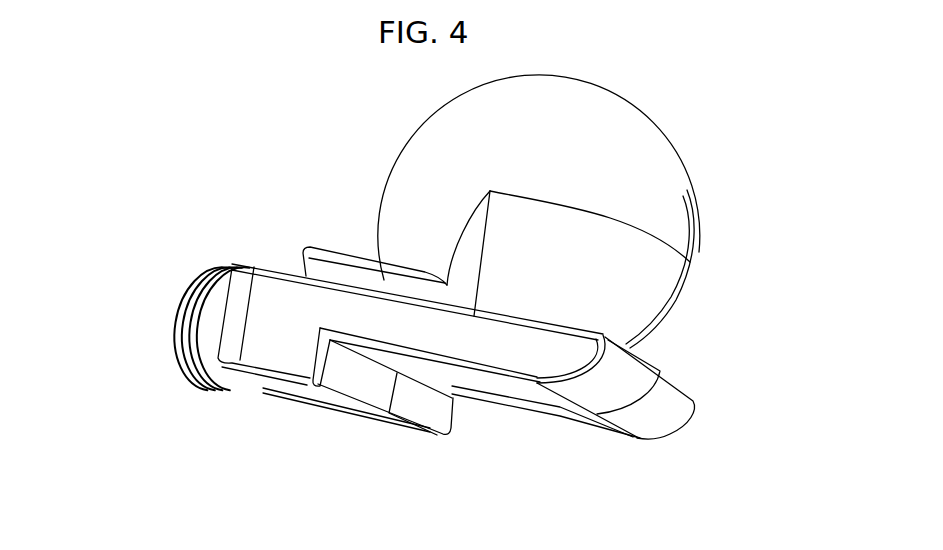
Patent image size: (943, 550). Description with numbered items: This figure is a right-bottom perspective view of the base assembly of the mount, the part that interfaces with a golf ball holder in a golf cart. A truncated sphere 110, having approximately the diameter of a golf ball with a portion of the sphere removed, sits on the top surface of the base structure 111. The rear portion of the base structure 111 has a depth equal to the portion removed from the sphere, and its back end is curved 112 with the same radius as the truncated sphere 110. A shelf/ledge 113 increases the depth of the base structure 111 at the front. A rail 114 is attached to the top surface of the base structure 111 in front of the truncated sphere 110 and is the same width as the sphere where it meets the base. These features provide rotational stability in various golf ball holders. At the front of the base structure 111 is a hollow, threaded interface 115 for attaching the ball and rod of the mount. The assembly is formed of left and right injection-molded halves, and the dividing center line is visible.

The truncated sphere 110 is at (605, 180).
The base structure 111 is at (282, 323).
The curved back end 112 is at (662, 400).
The shelf/ledge 113 is at (363, 377).
The rail 114 is at (330, 248).
The threaded interface 115 is at (197, 285).